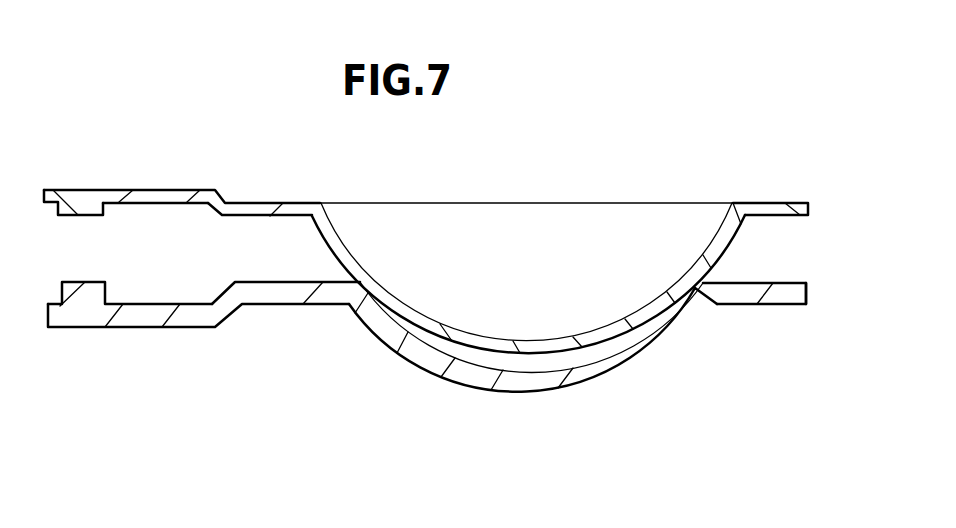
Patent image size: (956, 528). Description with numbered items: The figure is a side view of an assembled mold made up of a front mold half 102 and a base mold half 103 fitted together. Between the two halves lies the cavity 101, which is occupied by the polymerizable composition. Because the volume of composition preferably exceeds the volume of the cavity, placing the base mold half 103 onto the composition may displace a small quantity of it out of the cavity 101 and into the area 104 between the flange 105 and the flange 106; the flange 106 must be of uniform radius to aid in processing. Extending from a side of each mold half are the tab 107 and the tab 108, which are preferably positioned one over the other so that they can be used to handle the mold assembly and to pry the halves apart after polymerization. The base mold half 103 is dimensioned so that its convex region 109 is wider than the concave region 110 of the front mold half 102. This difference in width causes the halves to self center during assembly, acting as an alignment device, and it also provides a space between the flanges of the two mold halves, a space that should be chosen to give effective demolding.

The cavity 101 is at (510, 360).
The front mold half 102 is at (806, 300).
The base mold half 103 is at (812, 207).
The area between the flanges 104 is at (283, 258).
The flange 105 is at (282, 203).
The flange 106 is at (757, 283).
The tab 107 is at (158, 190).
The tab 108 is at (135, 330).
The convex region 109 is at (733, 246).
The concave region 110 is at (604, 357).